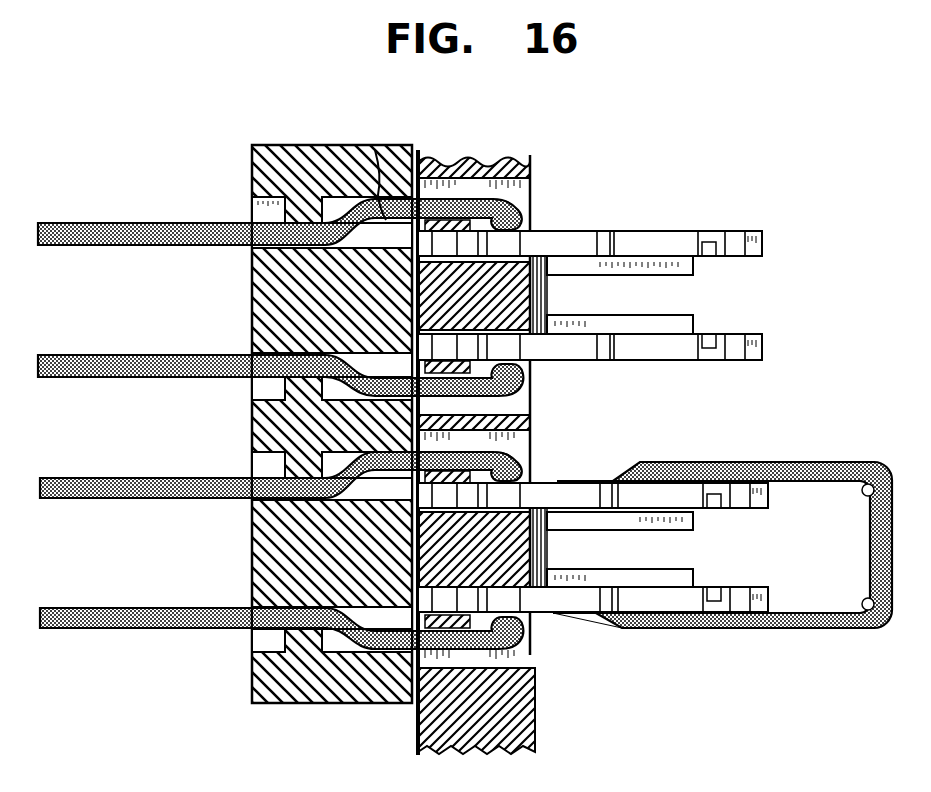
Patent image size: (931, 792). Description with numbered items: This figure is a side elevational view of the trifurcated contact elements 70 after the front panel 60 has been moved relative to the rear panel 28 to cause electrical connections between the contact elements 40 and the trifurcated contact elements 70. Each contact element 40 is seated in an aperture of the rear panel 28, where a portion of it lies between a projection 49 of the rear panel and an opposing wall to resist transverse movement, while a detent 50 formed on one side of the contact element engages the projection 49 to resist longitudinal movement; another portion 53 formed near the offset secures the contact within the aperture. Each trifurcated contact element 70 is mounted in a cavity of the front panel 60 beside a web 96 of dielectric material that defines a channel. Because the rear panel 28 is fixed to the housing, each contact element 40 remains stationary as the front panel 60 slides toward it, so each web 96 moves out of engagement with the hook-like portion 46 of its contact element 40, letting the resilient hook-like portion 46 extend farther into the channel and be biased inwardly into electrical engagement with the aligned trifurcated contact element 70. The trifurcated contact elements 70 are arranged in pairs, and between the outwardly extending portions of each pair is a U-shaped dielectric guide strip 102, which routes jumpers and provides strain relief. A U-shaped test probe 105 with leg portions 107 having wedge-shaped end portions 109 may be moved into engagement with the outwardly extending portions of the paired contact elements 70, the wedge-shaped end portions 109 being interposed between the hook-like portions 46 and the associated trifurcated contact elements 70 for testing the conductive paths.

The rear panel 28 is at (282, 552).
The contact element 40 is at (72, 226).
The hook-like portion 46 is at (523, 200).
The projection 49 is at (272, 212).
The detent 50 is at (270, 381).
The portion 53 is at (375, 150).
The front panel 60 is at (428, 712).
The trifurcated contact element 70 is at (676, 238).
The web 96 is at (440, 197).
The guide strip 102 is at (694, 276).
The test probe 105 is at (828, 462).
The leg portion 107 is at (797, 630).
The wedge-shaped end portion 109 is at (596, 630).